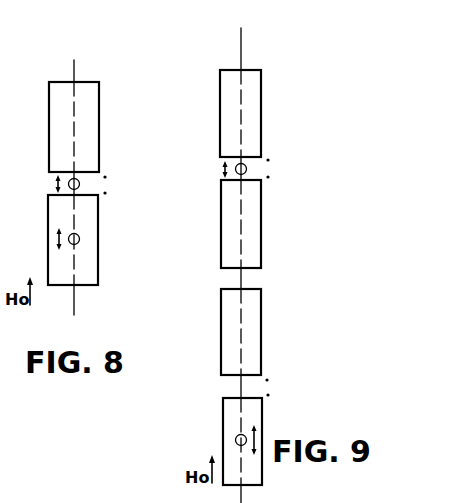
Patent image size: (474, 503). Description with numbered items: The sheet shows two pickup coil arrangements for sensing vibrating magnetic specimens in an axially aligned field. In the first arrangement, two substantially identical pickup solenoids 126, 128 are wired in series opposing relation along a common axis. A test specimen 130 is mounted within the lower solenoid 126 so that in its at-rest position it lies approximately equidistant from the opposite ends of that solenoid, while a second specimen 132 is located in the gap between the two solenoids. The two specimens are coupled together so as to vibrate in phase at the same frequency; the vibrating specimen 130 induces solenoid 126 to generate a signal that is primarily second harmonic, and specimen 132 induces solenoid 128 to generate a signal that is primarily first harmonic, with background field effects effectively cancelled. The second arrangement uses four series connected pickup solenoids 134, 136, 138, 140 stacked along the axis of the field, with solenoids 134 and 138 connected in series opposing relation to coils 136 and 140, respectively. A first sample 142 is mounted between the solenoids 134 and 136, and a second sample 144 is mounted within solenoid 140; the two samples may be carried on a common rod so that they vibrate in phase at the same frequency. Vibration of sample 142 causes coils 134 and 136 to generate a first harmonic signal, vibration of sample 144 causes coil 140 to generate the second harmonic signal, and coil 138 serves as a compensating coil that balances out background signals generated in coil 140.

In FIG. 8, the pickup solenoid 126 is at (100, 222).
In FIG. 8, the pickup solenoid 128 is at (100, 122).
In FIG. 8, the test specimen 130 is at (80, 243).
In FIG. 8, the second specimen 132 is at (81, 184).
In FIG. 9, the pickup solenoid 134 is at (262, 110).
In FIG. 9, the pickup solenoid 136 is at (262, 223).
In FIG. 9, the pickup solenoid 138 is at (263, 327).
In FIG. 9, the pickup solenoid 140 is at (264, 412).
In FIG. 9, the first sample 142 is at (248, 170).
In FIG. 9, the second sample 144 is at (236, 440).